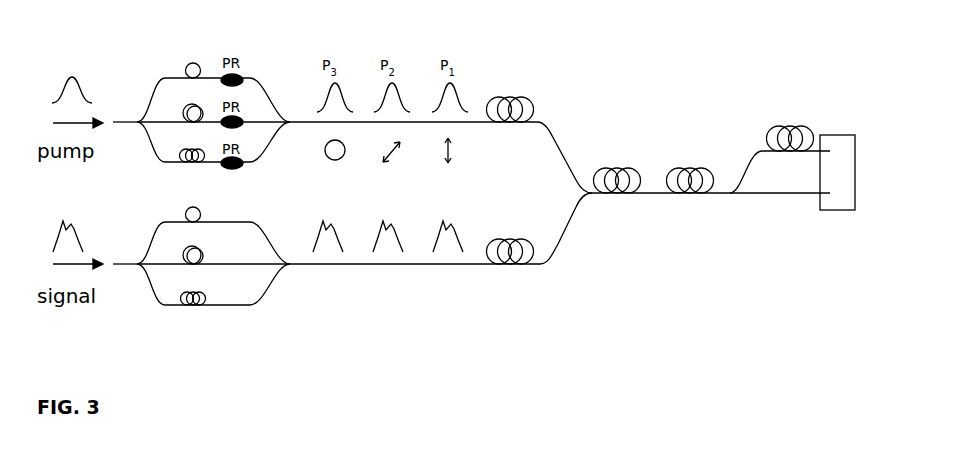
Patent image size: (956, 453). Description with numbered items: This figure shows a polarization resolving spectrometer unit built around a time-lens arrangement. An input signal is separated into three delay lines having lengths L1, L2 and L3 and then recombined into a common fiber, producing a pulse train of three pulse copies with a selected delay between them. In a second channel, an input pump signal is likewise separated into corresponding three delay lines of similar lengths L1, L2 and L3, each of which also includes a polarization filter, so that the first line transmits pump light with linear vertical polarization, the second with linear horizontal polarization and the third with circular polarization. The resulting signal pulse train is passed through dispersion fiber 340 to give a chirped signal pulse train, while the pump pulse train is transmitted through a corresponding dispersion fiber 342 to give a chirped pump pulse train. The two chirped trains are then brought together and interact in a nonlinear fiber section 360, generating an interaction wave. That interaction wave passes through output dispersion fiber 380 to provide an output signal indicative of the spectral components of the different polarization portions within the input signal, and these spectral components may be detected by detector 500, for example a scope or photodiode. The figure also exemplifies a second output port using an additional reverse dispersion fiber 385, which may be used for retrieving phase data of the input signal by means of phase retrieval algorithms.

The first delay line length L1 is at (199, 65).
The second delay line length L2 is at (186, 106).
The third delay line length L3 is at (181, 160).
The dispersion fiber 342 is at (510, 85).
The dispersion fiber 340 is at (510, 227).
The nonlinear fiber section 360 is at (617, 158).
The output dispersion fiber 380 is at (690, 156).
The reverse dispersion fiber 385 is at (790, 120).
The detector 500 is at (834, 193).